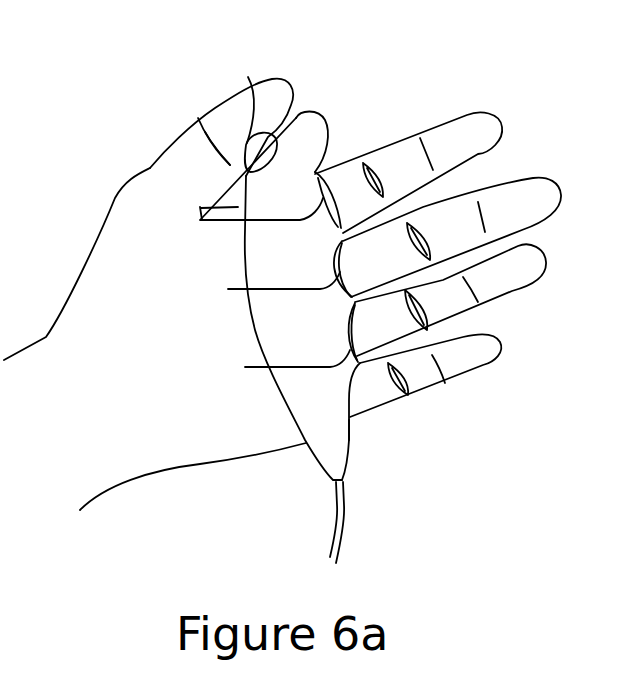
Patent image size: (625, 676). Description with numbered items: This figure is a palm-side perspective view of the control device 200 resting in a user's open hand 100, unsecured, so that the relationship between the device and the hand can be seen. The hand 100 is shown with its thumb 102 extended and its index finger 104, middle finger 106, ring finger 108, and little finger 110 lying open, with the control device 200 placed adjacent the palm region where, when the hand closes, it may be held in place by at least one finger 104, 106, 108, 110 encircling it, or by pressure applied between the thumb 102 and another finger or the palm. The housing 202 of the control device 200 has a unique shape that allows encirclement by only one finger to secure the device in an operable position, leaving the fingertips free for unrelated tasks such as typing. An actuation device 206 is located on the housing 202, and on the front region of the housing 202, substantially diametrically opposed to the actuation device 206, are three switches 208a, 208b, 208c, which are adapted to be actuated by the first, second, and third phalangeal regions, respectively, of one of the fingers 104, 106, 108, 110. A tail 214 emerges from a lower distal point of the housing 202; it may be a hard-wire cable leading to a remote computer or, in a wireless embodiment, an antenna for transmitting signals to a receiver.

The hand 100 is at (92, 145).
The thumb 102 is at (140, 188).
The index finger 104 is at (496, 130).
The middle finger 106 is at (552, 185).
The ring finger 108 is at (542, 275).
The little finger 110 is at (494, 358).
The control device 200 is at (335, 103).
The housing 202 is at (345, 450).
The actuation device 206 is at (221, 114).
The switch 208a is at (212, 220).
The switch 208b is at (235, 289).
The switch 208c is at (250, 367).
The tail 214 is at (340, 516).